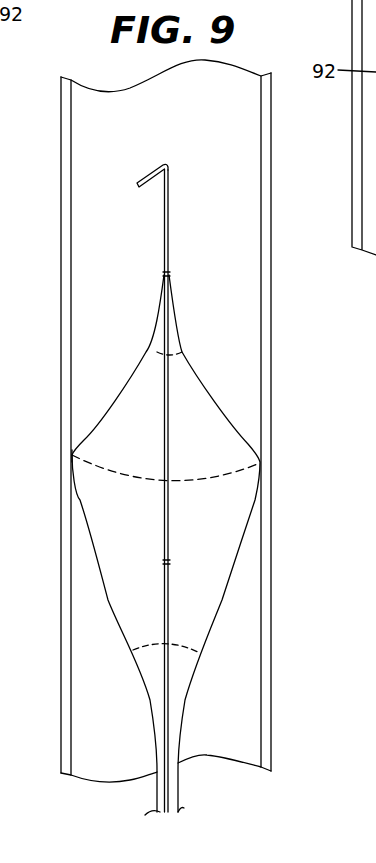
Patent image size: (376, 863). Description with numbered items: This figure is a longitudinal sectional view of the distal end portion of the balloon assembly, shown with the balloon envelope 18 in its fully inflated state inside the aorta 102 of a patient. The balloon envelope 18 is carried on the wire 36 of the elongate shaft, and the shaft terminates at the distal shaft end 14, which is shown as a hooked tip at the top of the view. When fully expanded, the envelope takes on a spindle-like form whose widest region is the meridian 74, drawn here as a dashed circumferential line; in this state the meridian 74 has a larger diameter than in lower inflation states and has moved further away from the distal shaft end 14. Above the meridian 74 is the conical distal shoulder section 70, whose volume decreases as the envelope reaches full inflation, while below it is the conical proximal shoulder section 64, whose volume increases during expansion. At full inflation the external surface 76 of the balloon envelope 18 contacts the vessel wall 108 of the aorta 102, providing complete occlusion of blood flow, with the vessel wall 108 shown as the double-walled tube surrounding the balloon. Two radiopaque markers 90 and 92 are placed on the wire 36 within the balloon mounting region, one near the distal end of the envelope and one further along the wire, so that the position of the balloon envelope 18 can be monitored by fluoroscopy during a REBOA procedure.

The distal shaft end 14 is at (168, 165).
The balloon envelope 18 is at (237, 572).
The wire 36 is at (170, 521).
The conical proximal shoulder section 64 is at (185, 668).
The conical distal shoulder section 70 is at (155, 343).
The meridian 74 is at (258, 480).
The external surface 76 is at (72, 452).
The radiopaque marker 90 is at (168, 272).
The radiopaque marker 92 is at (166, 562).
The aorta 102 is at (268, 399).
The vessel wall 108 is at (252, 324).